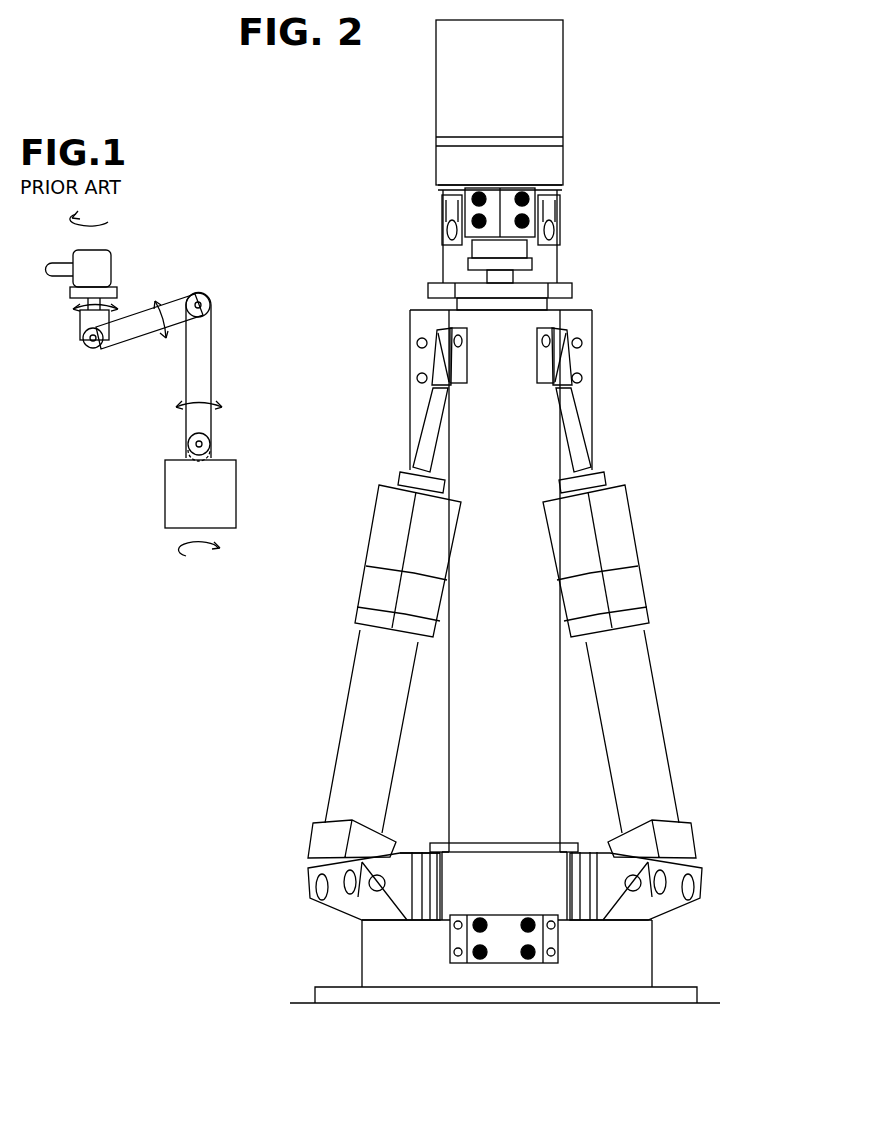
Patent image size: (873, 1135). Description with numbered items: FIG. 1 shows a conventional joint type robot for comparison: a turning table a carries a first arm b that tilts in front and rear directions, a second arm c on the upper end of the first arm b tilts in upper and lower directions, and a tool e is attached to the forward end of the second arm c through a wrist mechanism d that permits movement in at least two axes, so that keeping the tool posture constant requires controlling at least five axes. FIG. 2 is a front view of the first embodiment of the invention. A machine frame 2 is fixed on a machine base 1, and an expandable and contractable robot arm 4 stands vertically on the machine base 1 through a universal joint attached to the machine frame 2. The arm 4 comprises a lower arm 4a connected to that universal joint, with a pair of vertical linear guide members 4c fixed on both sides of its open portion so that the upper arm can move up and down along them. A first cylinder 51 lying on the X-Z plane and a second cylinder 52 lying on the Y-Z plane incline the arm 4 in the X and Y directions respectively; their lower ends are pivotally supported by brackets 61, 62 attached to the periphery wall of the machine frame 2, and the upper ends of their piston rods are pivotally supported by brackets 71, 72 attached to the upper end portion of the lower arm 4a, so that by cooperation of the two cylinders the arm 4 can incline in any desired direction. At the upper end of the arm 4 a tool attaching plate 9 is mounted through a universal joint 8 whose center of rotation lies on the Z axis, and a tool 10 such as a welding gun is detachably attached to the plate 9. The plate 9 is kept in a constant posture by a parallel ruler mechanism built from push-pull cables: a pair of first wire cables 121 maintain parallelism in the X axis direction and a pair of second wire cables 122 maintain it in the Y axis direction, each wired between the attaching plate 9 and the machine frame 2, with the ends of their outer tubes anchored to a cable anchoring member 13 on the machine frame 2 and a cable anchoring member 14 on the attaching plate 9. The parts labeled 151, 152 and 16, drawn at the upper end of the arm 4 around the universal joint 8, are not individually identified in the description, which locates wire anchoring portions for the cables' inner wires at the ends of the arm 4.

In FIG. 1, the turning table a is at (227, 490).
In FIG. 1, the first arm b is at (207, 368).
In FIG. 1, the second arm c is at (138, 322).
In FIG. 1, the wrist mechanism d is at (82, 330).
In FIG. 1, the tool e is at (61, 263).
In FIG. 2, the machine base 1 is at (393, 1000).
In FIG. 2, the machine frame 2 is at (622, 965).
In FIG. 2, the robot arm 4 is at (445, 784).
In FIG. 2, the lower arm 4a is at (536, 774).
In FIG. 2, the linear guide members 4c is at (414, 372).
In FIG. 2, the first cylinder 51 is at (636, 592).
In FIG. 2, the second cylinder 52 is at (377, 586).
In FIG. 2, the bracket 61 is at (702, 896).
In FIG. 2, the bracket 62 is at (356, 906).
In FIG. 2, the bracket 71 is at (536, 360).
In FIG. 2, the bracket 72 is at (468, 360).
In FIG. 2, the universal joint 8 is at (507, 248).
In FIG. 2, the tool attaching plate 9 is at (563, 186).
In FIG. 2, the tool 10 is at (556, 81).
In FIG. 2, the first wire cables 121 is at (476, 195).
In FIG. 2, the second wire cables 122 is at (476, 218).
In FIG. 2, the cable anchoring member 13 is at (496, 918).
In FIG. 2, the cable anchoring member 14 is at (494, 190).
In FIG. 2, the first locking piece 151 is at (556, 244).
In FIG. 2, the second locking piece 152 is at (446, 242).
In FIG. 2, the flange plate 16 is at (574, 291).